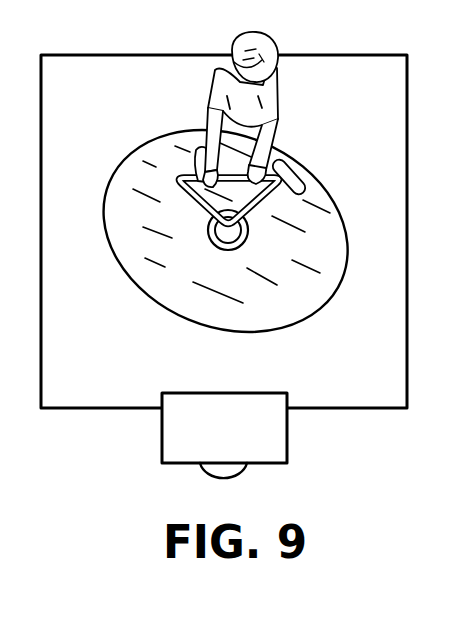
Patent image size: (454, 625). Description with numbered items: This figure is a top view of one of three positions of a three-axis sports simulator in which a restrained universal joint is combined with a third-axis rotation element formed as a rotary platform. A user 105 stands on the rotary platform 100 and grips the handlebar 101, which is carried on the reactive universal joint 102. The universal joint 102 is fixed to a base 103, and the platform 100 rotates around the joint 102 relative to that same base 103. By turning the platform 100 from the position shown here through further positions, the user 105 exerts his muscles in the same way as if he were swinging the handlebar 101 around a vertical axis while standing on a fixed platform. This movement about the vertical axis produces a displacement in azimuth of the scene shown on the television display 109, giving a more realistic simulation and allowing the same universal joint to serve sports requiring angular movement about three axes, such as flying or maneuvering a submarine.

The rotary platform 100 is at (326, 301).
The handlebar 101 is at (264, 195).
The reactive universal joint 102 is at (212, 244).
The base 103 is at (336, 85).
The user 105 is at (232, 45).
The television display 109 is at (204, 445).